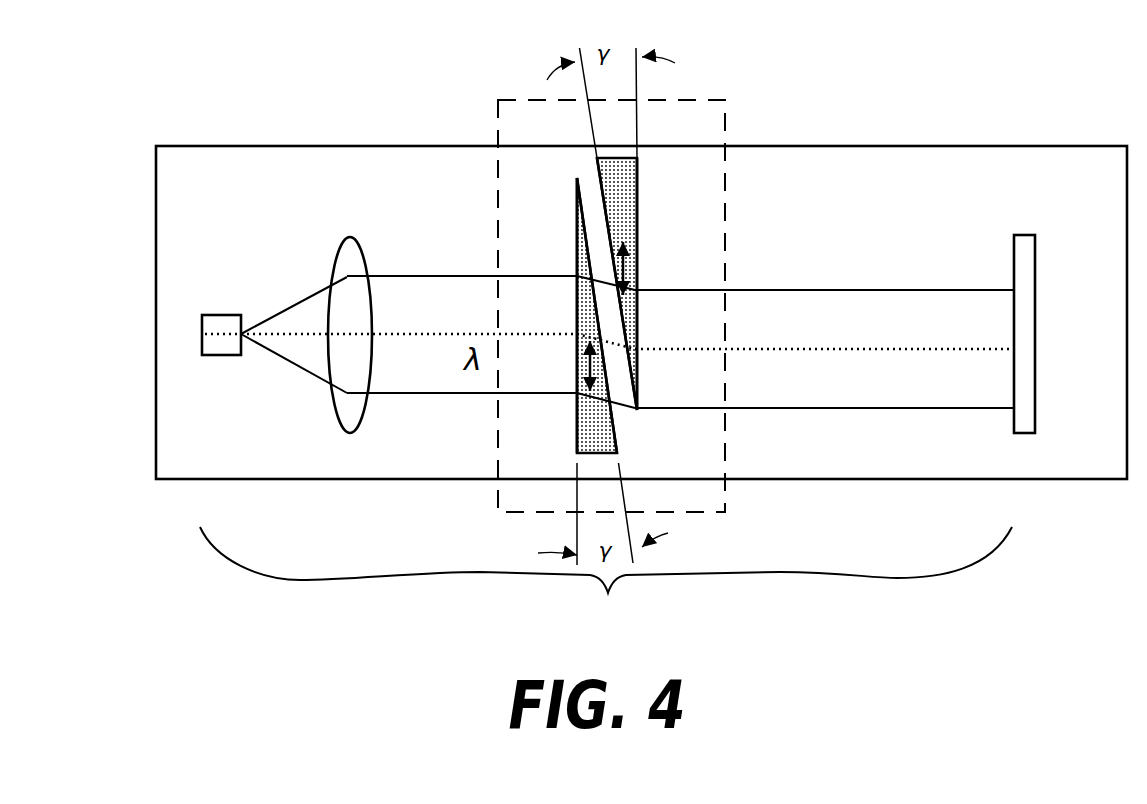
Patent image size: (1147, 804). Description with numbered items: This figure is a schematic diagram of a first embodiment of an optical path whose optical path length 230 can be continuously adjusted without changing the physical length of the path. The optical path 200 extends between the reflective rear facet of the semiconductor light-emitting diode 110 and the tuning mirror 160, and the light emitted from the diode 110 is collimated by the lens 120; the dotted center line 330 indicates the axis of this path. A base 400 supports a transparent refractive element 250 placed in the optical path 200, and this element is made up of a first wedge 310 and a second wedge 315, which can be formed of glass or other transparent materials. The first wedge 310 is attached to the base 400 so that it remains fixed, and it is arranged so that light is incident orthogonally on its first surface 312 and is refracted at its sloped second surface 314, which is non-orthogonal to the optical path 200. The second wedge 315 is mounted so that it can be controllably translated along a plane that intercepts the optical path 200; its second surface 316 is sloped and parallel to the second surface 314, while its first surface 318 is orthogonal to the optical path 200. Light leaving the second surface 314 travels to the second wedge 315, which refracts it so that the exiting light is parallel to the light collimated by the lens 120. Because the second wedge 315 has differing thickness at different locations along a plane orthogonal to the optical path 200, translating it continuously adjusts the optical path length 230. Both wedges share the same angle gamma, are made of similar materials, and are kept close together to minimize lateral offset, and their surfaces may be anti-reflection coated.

The semiconductor light-emitting diode 110 is at (215, 318).
The lens 120 is at (350, 253).
The tuning mirror 160 is at (1027, 298).
The optical path 200 is at (853, 295).
The optical path length 230 is at (606, 581).
The transparent refractive element 250 is at (692, 105).
The first wedge 310 is at (577, 445).
The first surface 312 is at (489, 311).
The second surface 314 is at (671, 364).
The second wedge 315 is at (622, 205).
The second surface 316 is at (543, 225).
The first surface 318 is at (643, 245).
The optical axis 330 is at (393, 332).
The base 400 is at (877, 143).